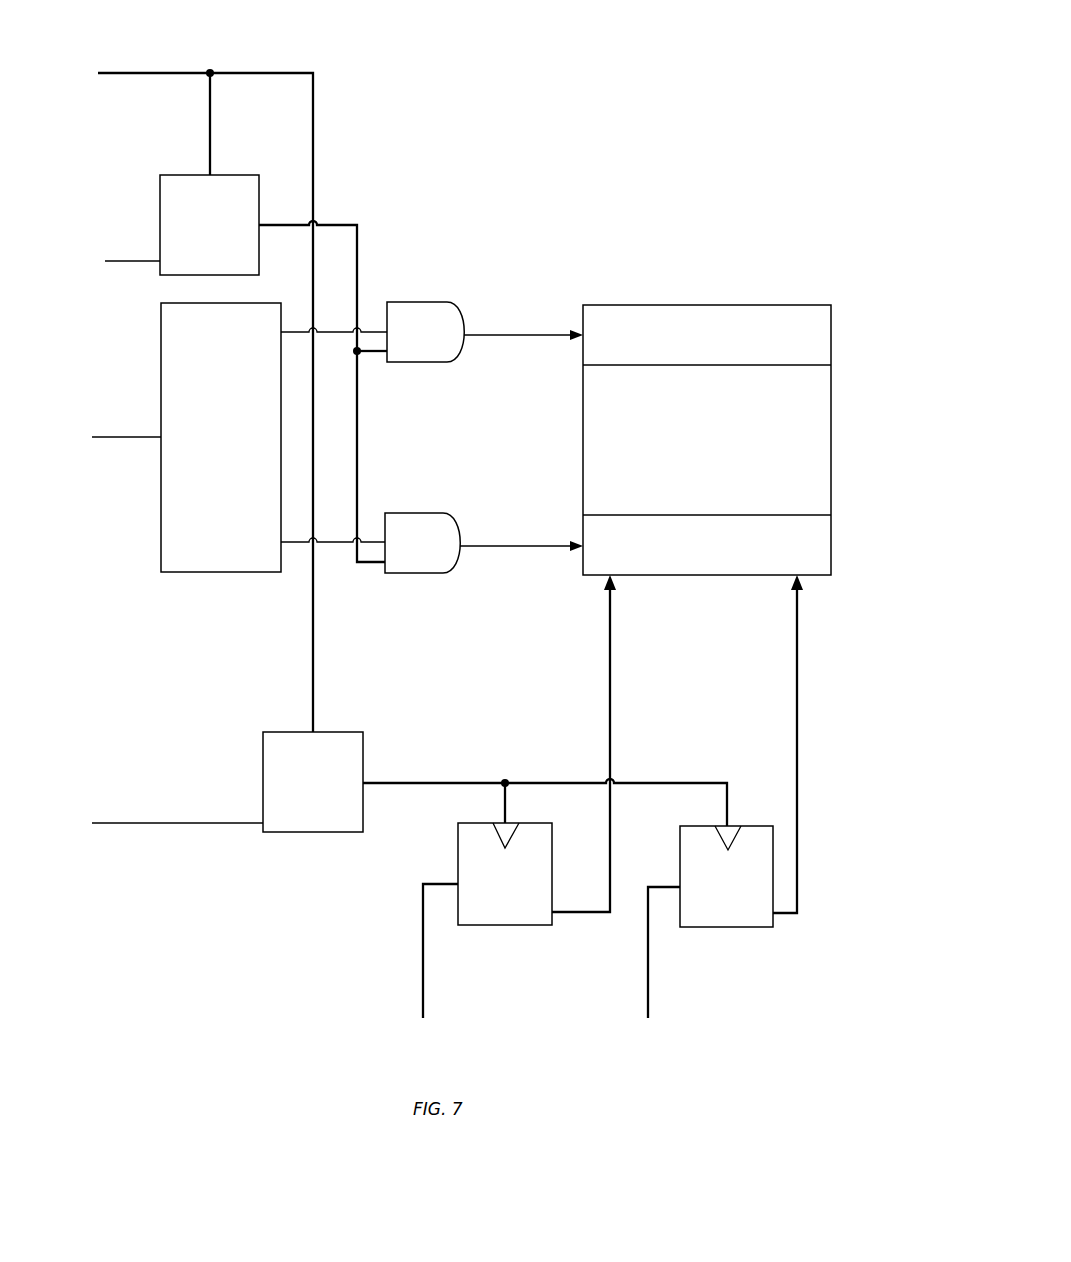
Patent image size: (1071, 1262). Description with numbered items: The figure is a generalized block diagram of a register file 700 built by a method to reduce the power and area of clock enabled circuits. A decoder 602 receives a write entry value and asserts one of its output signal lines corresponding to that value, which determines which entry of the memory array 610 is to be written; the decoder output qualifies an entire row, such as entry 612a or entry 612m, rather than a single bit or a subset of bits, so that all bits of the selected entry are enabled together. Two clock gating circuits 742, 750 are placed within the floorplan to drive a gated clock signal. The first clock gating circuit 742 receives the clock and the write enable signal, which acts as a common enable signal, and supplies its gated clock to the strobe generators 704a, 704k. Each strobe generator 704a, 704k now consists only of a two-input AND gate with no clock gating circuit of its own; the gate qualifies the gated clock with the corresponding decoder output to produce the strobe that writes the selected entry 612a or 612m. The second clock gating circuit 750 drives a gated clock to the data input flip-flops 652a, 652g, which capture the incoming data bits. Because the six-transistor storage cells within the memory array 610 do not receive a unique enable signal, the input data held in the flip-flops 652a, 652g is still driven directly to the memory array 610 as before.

The register file 700 is at (576, 92).
The clock gating circuit 742 is at (156, 197).
The decoder 602 is at (219, 578).
The strobe generator 704a is at (418, 294).
The strobe generator 704k is at (418, 505).
The memory array 610 is at (716, 397).
The entry 612a is at (707, 345).
The entry 612m is at (707, 536).
The clock gating circuit 750 is at (352, 727).
The flip-flop 652a is at (487, 933).
The flip-flop 652g is at (710, 935).